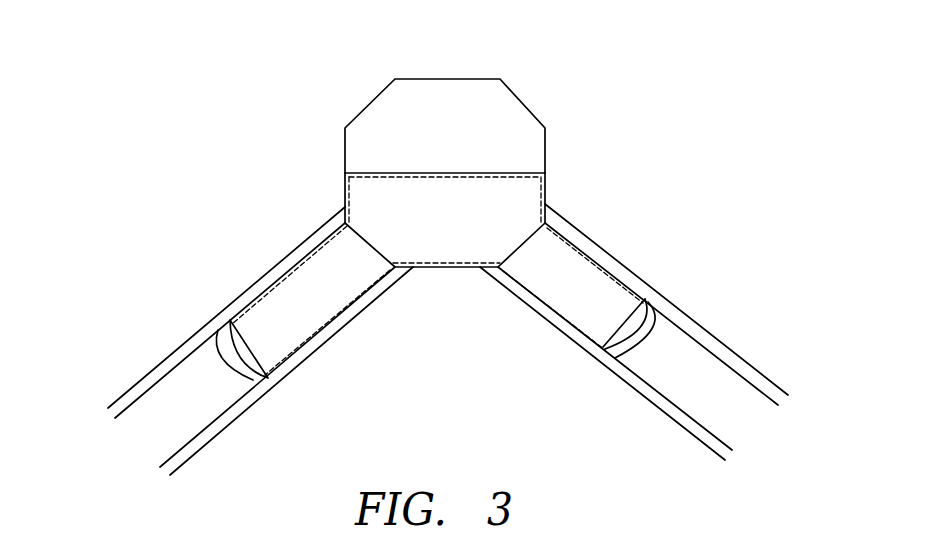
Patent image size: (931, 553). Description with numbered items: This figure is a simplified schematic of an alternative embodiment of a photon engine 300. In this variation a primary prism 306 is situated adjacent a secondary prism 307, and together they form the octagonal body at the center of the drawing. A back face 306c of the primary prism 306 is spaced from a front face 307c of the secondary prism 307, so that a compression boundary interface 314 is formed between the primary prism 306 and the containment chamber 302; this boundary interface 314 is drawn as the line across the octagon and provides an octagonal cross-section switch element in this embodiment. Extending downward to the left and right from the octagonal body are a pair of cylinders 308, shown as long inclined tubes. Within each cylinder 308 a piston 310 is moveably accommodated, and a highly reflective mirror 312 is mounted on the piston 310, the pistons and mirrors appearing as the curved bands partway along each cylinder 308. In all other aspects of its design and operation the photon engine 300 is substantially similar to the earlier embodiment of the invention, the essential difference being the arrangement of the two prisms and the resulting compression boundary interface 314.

The photon engine 300 is at (140, 123).
The containment chamber 302 is at (332, 229).
The primary prism 306 is at (542, 138).
The back face 306c is at (485, 177).
The secondary prism 307 is at (546, 204).
The front face 307c is at (542, 192).
The cylinder 308 is at (167, 395).
The piston 310 is at (648, 320).
The highly reflective mirror 312 is at (634, 306).
The compression boundary interface 314 is at (330, 167).